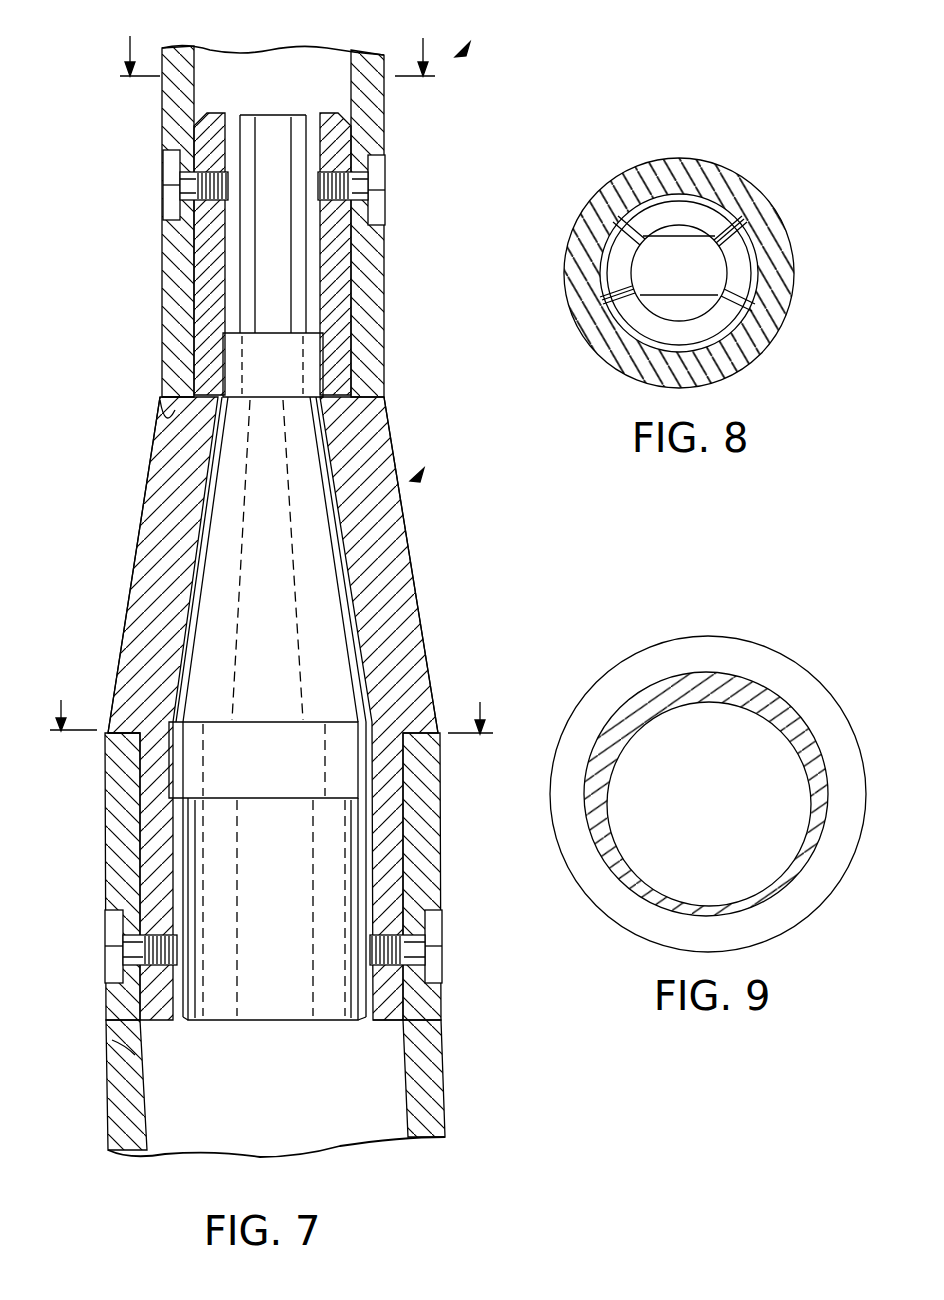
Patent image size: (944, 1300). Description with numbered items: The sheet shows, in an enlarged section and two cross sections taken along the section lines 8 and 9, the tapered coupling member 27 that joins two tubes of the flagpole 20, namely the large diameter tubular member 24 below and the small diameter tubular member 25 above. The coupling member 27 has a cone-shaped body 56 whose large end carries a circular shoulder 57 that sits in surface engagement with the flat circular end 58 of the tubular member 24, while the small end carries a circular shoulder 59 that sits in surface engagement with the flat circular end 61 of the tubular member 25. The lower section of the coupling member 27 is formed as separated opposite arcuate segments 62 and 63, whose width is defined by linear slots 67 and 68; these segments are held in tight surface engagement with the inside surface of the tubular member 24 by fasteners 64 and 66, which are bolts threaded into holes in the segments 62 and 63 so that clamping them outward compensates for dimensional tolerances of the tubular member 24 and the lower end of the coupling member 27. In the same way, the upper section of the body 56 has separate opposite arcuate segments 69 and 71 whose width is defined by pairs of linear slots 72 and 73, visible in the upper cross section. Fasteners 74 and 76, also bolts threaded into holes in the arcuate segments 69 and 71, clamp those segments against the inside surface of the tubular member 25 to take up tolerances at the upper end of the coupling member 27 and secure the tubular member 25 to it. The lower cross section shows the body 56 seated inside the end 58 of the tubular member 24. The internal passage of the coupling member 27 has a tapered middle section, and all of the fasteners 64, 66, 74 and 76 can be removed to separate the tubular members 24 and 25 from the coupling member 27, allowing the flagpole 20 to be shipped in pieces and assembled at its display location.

In FIG. 7, the section line 8- 8 is at (277, 41).
In FIG. 7, the section line 9- 9 is at (271, 702).
In FIG. 7, the flagpole 20 is at (462, 52).
In FIG. 7, the large diameter tubular member 24 is at (425, 1086).
In FIG. 7, the small diameter tubular member 25 is at (366, 62).
In FIG. 8, the small diameter tubular member 25 is at (706, 162).
In FIG. 7, the tapered coupling member 27 is at (418, 476).
In FIG. 7, the cone-shaped body 56 is at (394, 563).
In FIG. 9, the cone-shaped body 56 is at (687, 688).
In FIG. 7, the circular shoulder 57 is at (110, 726).
In FIG. 7, the flat circular end 58 is at (108, 770).
In FIG. 9, the flat circular end 58 is at (757, 660).
In FIG. 7, the circular shoulder 59 is at (168, 418).
In FIG. 7, the flat circular end 61 is at (177, 395).
In FIG. 7, the arcuate segment 62 is at (130, 1055).
In FIG. 7, the arcuate segment 63 is at (400, 1012).
In FIG. 7, the fastener 64 is at (117, 955).
In FIG. 7, the fastener 66 is at (440, 948).
In FIG. 7, the linear slot 67 is at (183, 1017).
In FIG. 7, the linear slot 68 is at (367, 1018).
In FIG. 7, the arcuate segment 69 is at (214, 132).
In FIG. 8, the arcuate segment 69 is at (617, 263).
In FIG. 7, the arcuate segment 71 is at (338, 148).
In FIG. 8, the arcuate segment 71 is at (738, 273).
In FIG. 7, the linear slot 72 is at (234, 128).
In FIG. 8, the linear slot 72 is at (612, 305).
In FIG. 7, the linear slot 73 is at (313, 128).
In FIG. 8, the linear slot 73 is at (725, 246).
In FIG. 7, the fastener 74 is at (168, 190).
In FIG. 7, the fastener 76 is at (378, 192).